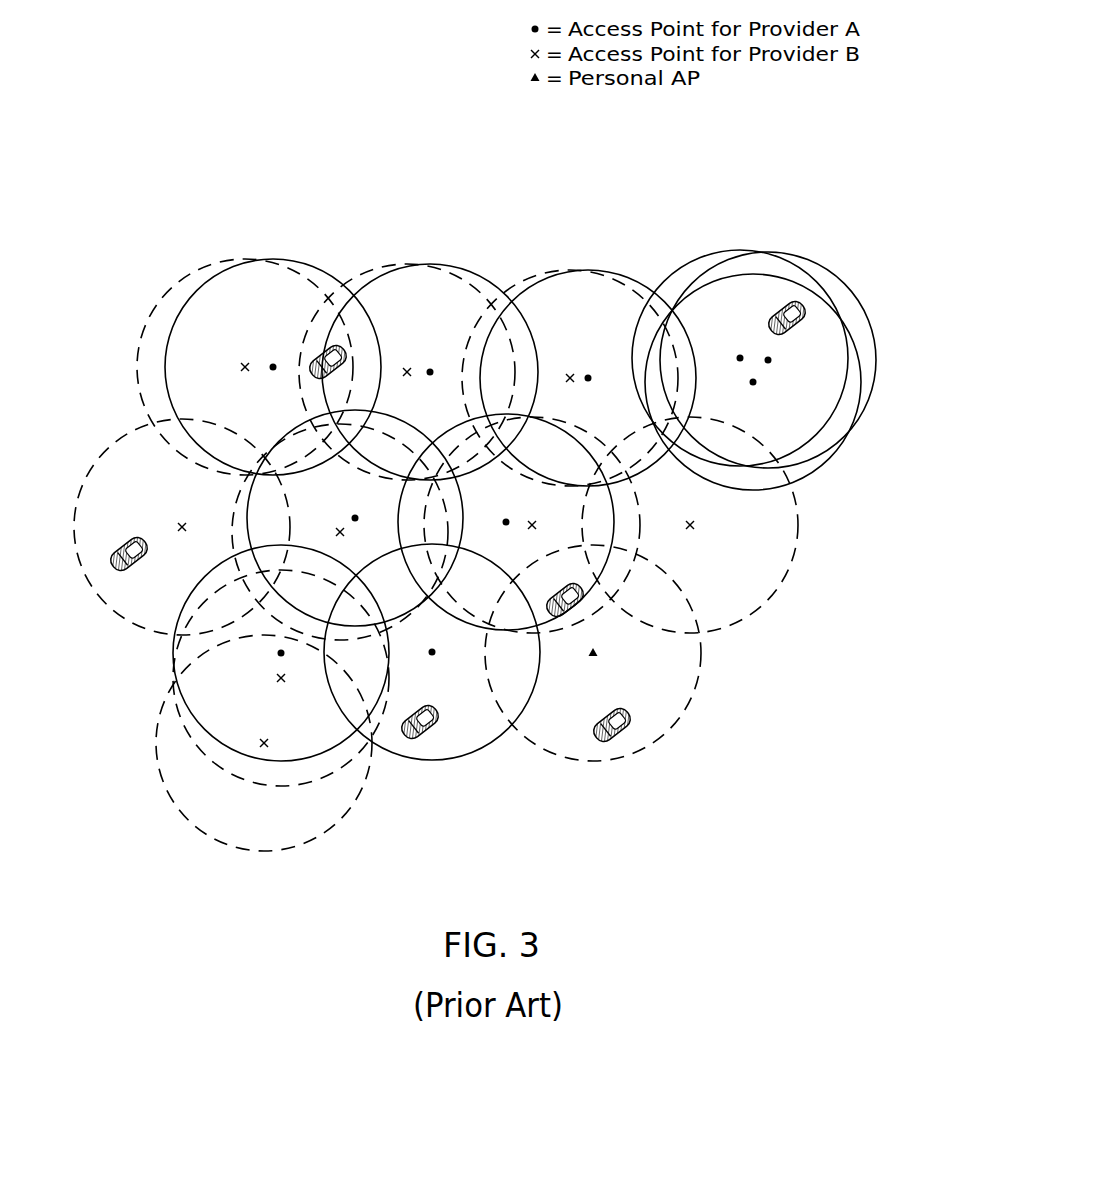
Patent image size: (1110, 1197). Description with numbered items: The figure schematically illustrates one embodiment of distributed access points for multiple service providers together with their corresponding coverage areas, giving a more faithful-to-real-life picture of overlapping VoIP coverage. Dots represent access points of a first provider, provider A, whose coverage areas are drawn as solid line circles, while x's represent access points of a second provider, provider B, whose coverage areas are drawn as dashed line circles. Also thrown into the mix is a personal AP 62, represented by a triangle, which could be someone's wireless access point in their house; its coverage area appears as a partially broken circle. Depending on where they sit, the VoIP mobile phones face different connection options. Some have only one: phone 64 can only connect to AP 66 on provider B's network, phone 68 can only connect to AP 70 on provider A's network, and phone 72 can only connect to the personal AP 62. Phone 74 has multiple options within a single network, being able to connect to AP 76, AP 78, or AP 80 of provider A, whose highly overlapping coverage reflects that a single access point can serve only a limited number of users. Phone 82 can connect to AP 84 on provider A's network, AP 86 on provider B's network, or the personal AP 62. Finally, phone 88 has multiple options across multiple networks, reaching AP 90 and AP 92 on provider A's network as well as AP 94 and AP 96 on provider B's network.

The personal AP 62 is at (596, 660).
The phone 64 is at (125, 575).
The AP 66 is at (182, 522).
The phone 68 is at (417, 742).
The AP 70 is at (434, 656).
The phone 72 is at (592, 737).
The phone 74 is at (805, 320).
The AP 76 is at (734, 358).
The AP 78 is at (752, 388).
The AP 80 is at (772, 362).
The phone 82 is at (563, 622).
The AP 84 is at (507, 528).
The AP 86 is at (532, 518).
The phone 88 is at (305, 362).
The AP 90 is at (273, 360).
The AP 92 is at (431, 364).
The AP 94 is at (245, 372).
The AP 96 is at (408, 380).